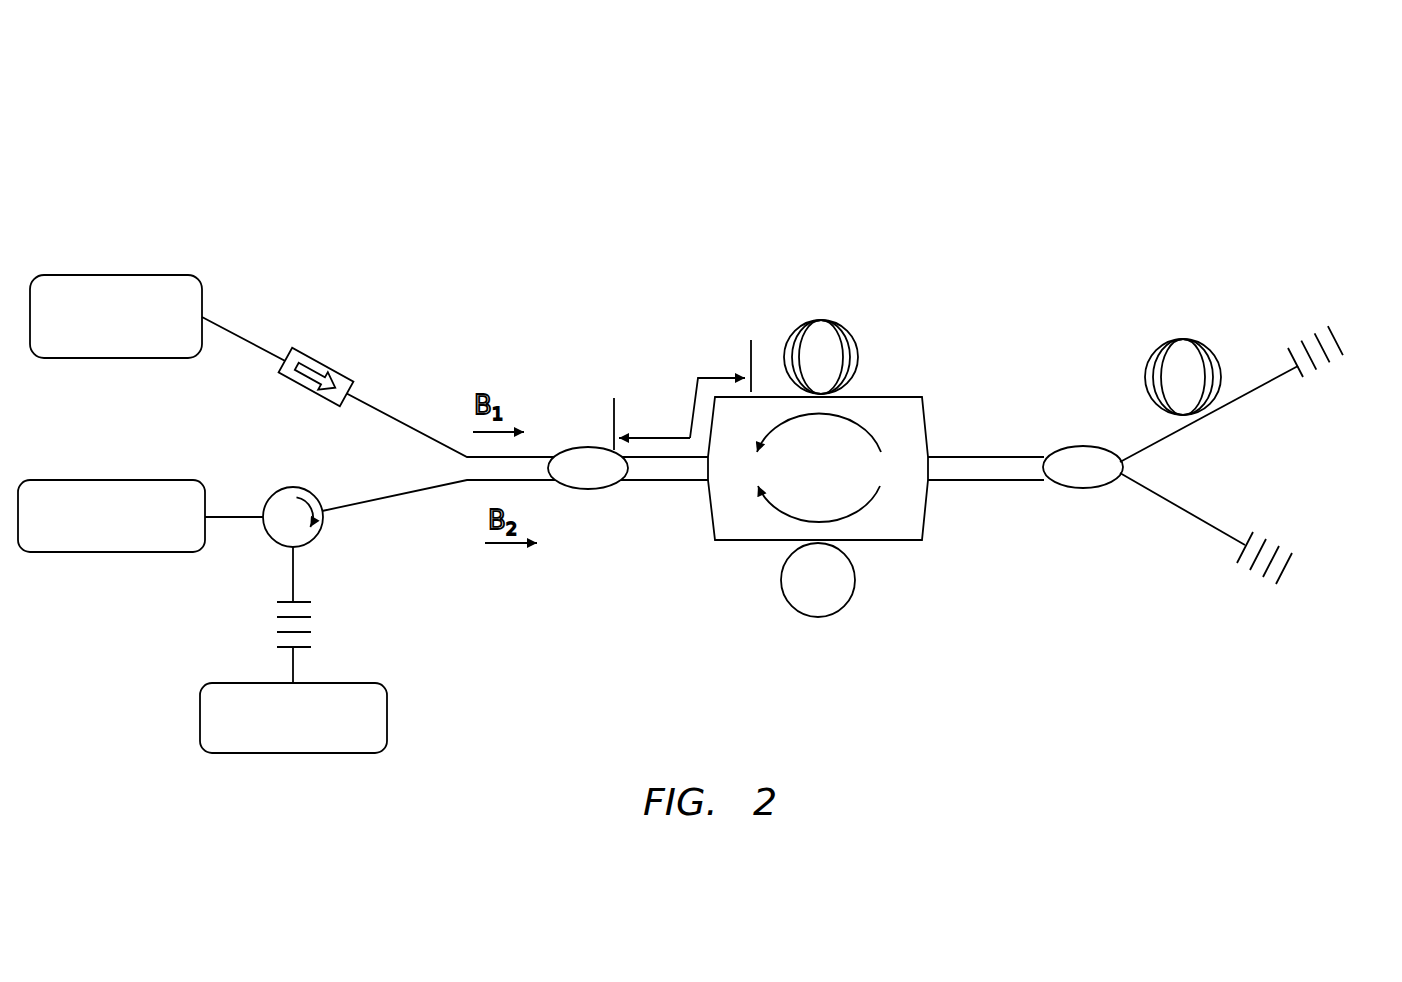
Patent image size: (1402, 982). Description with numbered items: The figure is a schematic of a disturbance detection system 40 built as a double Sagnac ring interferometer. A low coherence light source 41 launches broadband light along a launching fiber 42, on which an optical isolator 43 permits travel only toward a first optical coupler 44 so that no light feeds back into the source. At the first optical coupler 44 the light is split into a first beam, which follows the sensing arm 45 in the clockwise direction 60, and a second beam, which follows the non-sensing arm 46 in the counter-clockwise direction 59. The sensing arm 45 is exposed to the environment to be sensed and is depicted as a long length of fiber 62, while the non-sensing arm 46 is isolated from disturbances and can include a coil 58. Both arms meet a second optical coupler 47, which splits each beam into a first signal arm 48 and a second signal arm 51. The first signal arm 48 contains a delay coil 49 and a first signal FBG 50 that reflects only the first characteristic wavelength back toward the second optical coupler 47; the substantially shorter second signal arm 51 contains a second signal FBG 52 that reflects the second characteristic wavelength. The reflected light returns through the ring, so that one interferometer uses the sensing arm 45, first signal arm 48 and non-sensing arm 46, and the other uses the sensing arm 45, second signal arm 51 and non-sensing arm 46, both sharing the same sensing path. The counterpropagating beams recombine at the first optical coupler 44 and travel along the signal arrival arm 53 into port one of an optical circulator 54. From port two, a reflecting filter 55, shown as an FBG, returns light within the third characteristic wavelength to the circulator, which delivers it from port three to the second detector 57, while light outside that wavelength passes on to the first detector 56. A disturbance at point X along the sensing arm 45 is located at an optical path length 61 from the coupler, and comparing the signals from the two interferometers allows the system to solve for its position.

The disturbance detection system 40 is at (377, 143).
The light source 41 is at (93, 275).
The launching fiber 42 is at (245, 338).
The optical isolator 43 is at (333, 363).
The first optical coupler 44 is at (586, 447).
The sensing arm 45 is at (787, 445).
The non-sensing arm 46 is at (733, 585).
The second optical coupler 47 is at (1073, 446).
The first signal arm 48 is at (1258, 378).
The delay coil 49 is at (1160, 345).
The first signal FBG 50 is at (1302, 338).
The second signal arm 51 is at (1177, 518).
The second signal FBG 52 is at (1285, 545).
The signal arrival arm 53 is at (408, 495).
The optical circulator 54 is at (297, 487).
The reflecting filter 55 is at (270, 622).
The first detector 56 is at (258, 755).
The second detector 57 is at (72, 553).
The coil 58 is at (818, 618).
The counter-clockwise direction 59 is at (858, 420).
The clockwise direction 60 is at (760, 528).
The optical path length 61 is at (697, 388).
The long length of fiber 62 is at (803, 322).